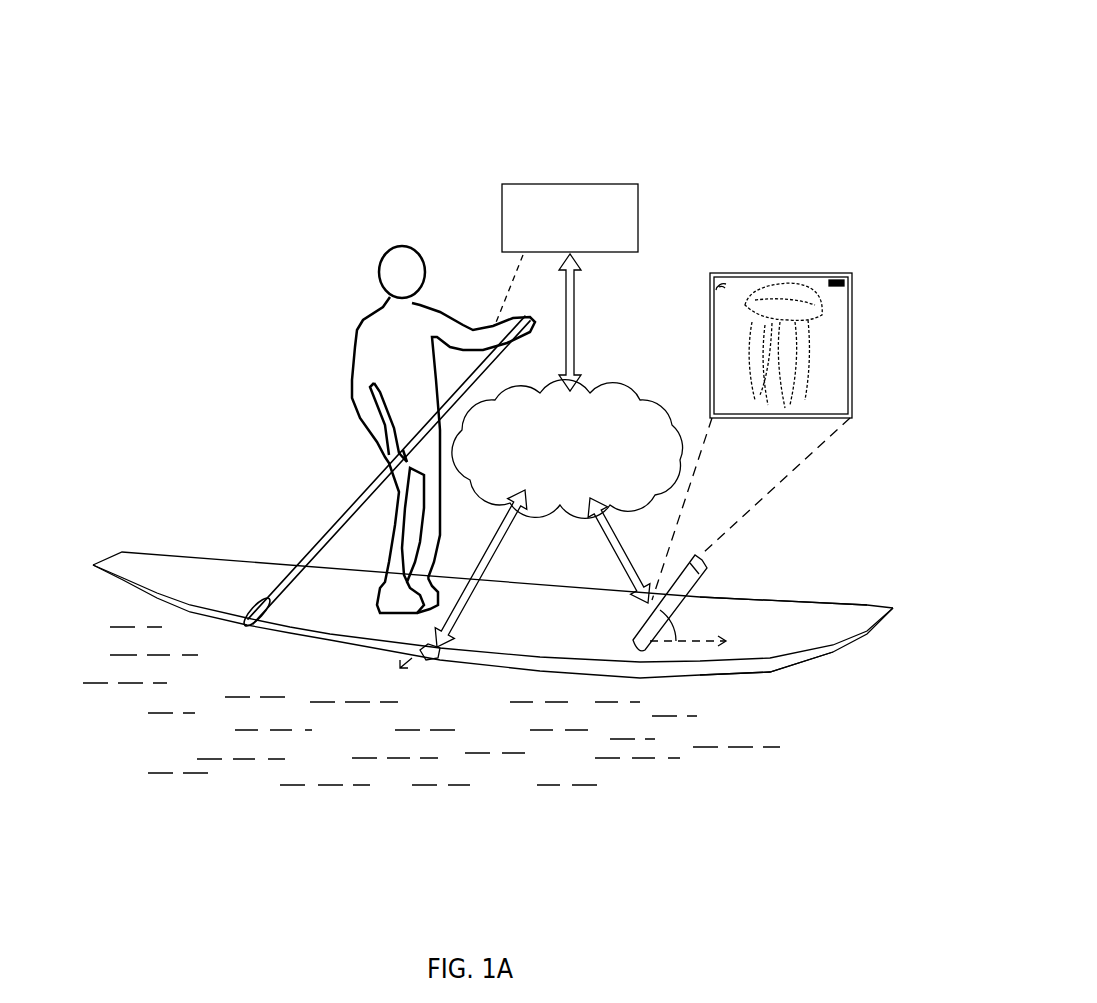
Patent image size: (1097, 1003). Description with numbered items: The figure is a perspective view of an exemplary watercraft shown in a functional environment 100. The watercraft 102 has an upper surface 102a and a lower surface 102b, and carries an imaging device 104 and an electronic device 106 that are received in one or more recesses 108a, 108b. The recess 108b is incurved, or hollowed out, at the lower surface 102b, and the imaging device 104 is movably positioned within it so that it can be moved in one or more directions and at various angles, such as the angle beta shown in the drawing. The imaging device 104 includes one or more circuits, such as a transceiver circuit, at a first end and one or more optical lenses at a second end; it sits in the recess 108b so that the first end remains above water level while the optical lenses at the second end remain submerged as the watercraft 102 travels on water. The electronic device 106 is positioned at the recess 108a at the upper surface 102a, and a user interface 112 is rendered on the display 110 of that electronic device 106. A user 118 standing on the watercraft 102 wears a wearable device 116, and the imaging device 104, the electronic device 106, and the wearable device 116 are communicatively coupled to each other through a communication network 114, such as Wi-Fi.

The functional environment 100 is at (671, 75).
The watercraft 102 is at (185, 557).
The upper surface 102a is at (795, 615).
The lower surface 102b is at (778, 673).
The imaging device 104 is at (432, 656).
The electronic device 106 is at (700, 580).
The recess 108a is at (637, 623).
The recess 108b is at (428, 648).
The display 110 is at (803, 275).
The user interface 112 is at (732, 300).
The communication network 114 is at (567, 449).
The wearable device 116 is at (566, 254).
The user 118 is at (398, 250).